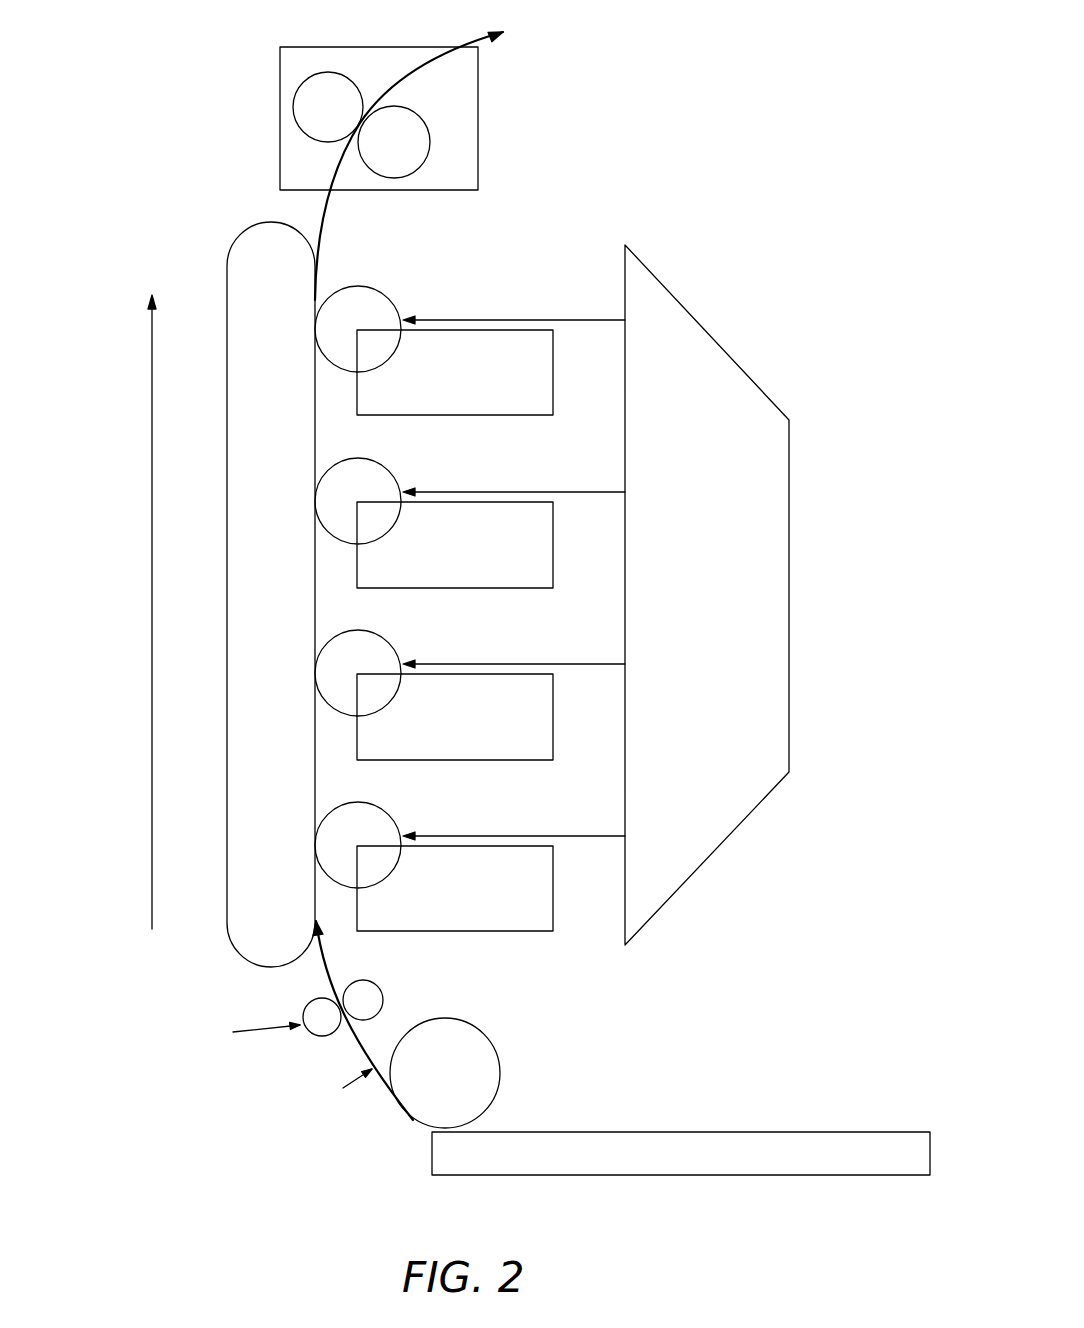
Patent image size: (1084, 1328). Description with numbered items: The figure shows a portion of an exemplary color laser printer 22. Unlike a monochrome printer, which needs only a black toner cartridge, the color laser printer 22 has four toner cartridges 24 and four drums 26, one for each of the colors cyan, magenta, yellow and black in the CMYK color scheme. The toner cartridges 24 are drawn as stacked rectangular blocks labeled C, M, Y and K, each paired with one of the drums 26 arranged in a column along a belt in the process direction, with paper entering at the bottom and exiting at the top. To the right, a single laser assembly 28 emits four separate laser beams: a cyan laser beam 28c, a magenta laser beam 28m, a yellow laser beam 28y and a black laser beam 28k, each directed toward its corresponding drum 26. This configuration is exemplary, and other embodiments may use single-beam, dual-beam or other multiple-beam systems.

The color laser printer 22 is at (745, 72).
The toner cartridge 24 is at (490, 415).
The drum 26 is at (378, 291).
The laser assembly 28 is at (767, 392).
The cyan laser beam 28c is at (567, 313).
The magenta laser beam 28m is at (572, 486).
The yellow laser beam 28y is at (572, 659).
The black laser beam 28k is at (572, 831).